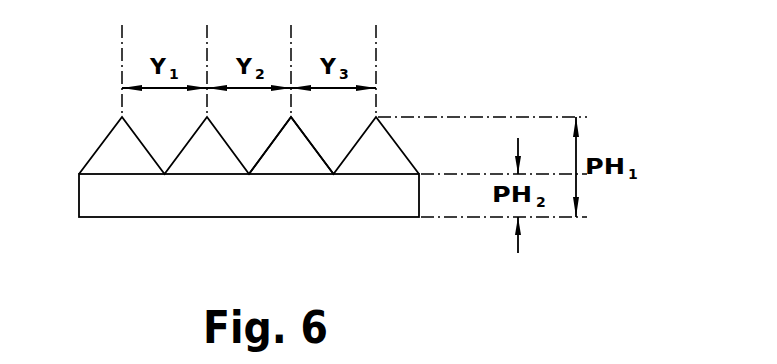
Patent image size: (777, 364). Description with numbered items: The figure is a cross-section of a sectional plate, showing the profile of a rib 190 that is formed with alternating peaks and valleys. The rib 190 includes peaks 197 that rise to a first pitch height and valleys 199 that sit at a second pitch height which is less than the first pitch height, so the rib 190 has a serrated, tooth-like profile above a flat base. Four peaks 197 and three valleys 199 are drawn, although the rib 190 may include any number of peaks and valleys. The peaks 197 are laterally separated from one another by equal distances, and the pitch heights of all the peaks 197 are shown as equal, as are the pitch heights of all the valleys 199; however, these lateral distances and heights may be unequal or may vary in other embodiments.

The rib 190 is at (97, 152).
The peaks 197 is at (291, 118).
The valleys 199 is at (171, 183).